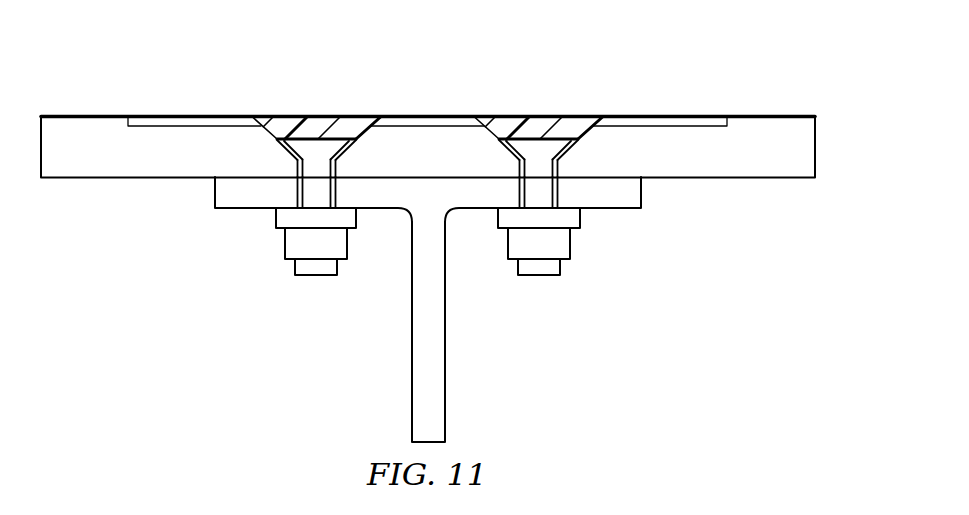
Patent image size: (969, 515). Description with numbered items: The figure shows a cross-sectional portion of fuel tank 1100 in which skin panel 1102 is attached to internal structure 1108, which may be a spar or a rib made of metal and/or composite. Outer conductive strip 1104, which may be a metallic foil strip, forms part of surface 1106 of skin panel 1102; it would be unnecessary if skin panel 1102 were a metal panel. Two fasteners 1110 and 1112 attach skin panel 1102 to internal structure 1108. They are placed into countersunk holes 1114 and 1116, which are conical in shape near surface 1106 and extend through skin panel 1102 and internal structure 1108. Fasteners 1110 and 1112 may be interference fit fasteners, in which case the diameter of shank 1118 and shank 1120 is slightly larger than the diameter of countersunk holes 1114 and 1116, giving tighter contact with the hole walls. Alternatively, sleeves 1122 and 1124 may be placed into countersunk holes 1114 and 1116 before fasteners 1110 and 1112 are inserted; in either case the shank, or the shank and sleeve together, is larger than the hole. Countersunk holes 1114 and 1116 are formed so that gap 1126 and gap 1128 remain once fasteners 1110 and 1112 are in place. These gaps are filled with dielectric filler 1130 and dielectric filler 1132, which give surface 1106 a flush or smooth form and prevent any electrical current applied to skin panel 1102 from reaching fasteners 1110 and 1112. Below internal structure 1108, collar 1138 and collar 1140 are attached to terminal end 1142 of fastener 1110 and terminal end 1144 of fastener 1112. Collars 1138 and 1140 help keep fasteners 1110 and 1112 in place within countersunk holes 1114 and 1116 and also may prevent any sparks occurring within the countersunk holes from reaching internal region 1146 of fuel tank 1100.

The fuel tank 1100 is at (673, 45).
The skin panel 1102 is at (818, 137).
The outer conductive strip 1104 is at (158, 123).
The surface 1106 is at (85, 123).
The internal structure 1108 is at (445, 363).
The fastener 1110 is at (330, 148).
The fastener 1112 is at (552, 148).
The countersunk hole 1114 is at (280, 152).
The countersunk hole 1116 is at (500, 152).
The shank 1118 is at (315, 193).
The shank 1120 is at (538, 193).
The sleeve 1122 is at (338, 192).
The sleeve 1124 is at (518, 192).
The gap 1126 is at (365, 137).
The gap 1128 is at (587, 137).
The dielectric filler 1130 is at (272, 123).
The dielectric filler 1132 is at (495, 125).
The collar 1138 is at (283, 246).
The collar 1140 is at (573, 246).
The terminal end 1142 is at (315, 277).
The terminal end 1144 is at (538, 277).
The internal region 1146 is at (303, 356).